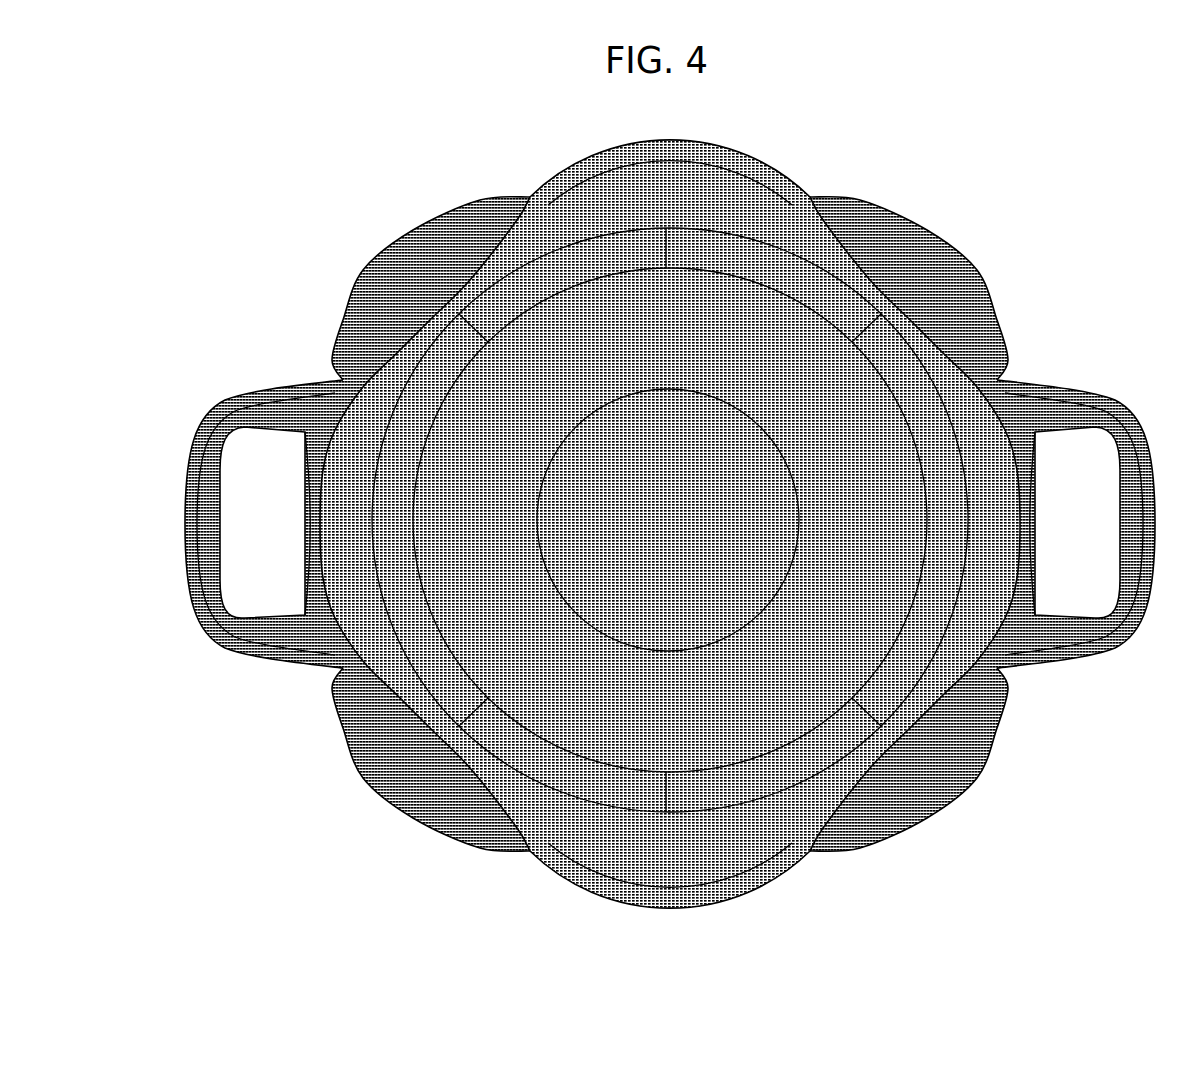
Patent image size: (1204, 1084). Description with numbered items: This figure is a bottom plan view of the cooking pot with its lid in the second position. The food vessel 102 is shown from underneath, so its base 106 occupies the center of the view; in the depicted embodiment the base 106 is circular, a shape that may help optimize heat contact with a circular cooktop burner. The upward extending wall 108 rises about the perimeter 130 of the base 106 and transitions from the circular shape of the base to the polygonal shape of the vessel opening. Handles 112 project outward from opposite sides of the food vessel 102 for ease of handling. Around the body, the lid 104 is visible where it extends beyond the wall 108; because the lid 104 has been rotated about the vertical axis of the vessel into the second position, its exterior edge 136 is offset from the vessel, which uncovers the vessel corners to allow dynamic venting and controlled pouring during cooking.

The food vessel 102 is at (781, 902).
The lid 104 is at (366, 235).
The base 106 is at (795, 692).
The upward extending wall 108 is at (975, 443).
The handle 112 is at (1081, 672).
The perimeter 130 is at (873, 377).
The exterior edge 136 is at (887, 205).